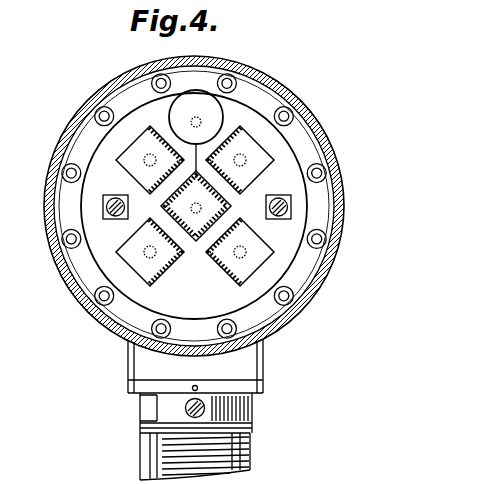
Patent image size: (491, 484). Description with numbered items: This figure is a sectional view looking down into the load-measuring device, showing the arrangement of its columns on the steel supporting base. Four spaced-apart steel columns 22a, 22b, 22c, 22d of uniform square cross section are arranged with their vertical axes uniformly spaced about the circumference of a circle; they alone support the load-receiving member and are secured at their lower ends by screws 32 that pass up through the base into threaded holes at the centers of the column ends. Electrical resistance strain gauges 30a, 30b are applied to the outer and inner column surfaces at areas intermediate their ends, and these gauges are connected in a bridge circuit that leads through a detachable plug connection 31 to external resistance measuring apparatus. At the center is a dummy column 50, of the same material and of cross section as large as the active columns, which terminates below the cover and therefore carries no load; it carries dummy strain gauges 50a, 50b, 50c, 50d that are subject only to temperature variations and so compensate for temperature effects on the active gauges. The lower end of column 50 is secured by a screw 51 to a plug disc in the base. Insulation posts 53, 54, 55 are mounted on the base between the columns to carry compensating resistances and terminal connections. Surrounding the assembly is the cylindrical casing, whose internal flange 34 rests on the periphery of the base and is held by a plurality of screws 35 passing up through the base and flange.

The column 22a is at (265, 165).
The column 22b is at (260, 254).
The column 22c is at (116, 252).
The column 22d is at (150, 128).
The strain gauge 30a is at (258, 136).
The strain gauge 30b is at (196, 130).
The detachable plug connection 31 is at (262, 406).
The screw 32 is at (241, 250).
The internal flange 34 is at (306, 289).
The screw 35 is at (318, 150).
The central column 50 is at (195, 242).
The dummy strain gauge 50a is at (240, 190).
The dummy strain gauge 50b is at (214, 242).
The dummy strain gauge 50c is at (178, 242).
The dummy strain gauge 50d is at (158, 188).
The screw 51 is at (195, 205).
The insulation post 53 is at (103, 201).
The insulation post 54 is at (300, 190).
The insulation post 55 is at (220, 120).